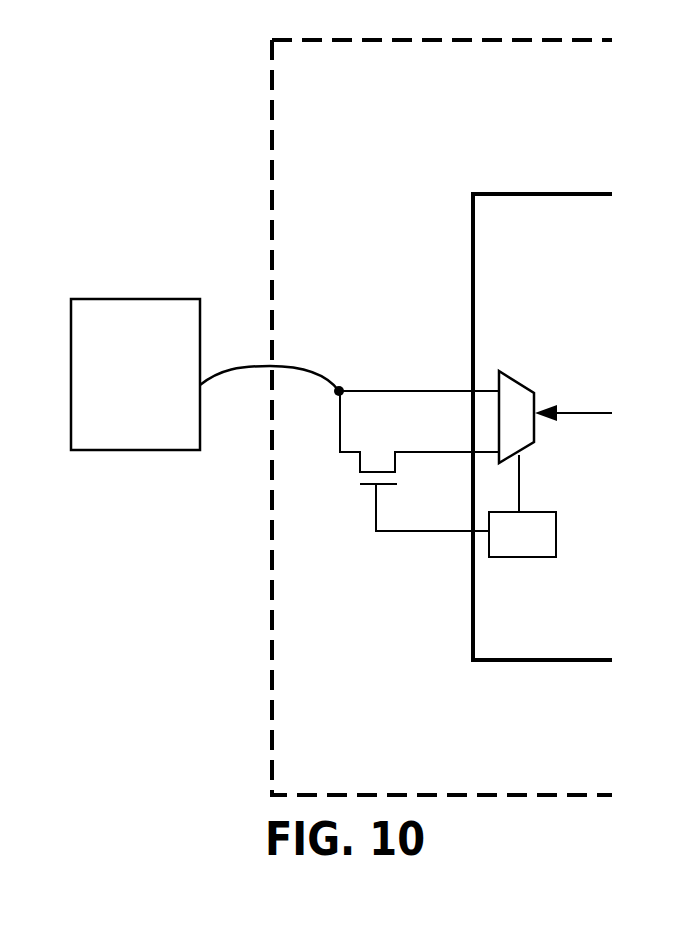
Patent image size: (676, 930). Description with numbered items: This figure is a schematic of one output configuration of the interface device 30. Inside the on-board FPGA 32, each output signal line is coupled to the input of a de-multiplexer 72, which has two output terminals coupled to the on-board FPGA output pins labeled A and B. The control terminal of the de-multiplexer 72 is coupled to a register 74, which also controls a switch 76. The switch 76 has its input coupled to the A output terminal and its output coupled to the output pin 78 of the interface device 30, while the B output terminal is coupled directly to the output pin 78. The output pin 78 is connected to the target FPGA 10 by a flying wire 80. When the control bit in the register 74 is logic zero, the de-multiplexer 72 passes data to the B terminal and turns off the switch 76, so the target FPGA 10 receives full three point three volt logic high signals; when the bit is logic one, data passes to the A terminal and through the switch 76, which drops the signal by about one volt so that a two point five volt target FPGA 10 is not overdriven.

The target FPGA 10 is at (138, 298).
The interface device 30 is at (420, 40).
The on-board FPGA 32 is at (490, 194).
The de-multiplexer 72 is at (555, 441).
The register 74 is at (528, 512).
The switch 76 is at (419, 461).
The output pin 78 is at (416, 402).
The flying wire 80 is at (250, 365).